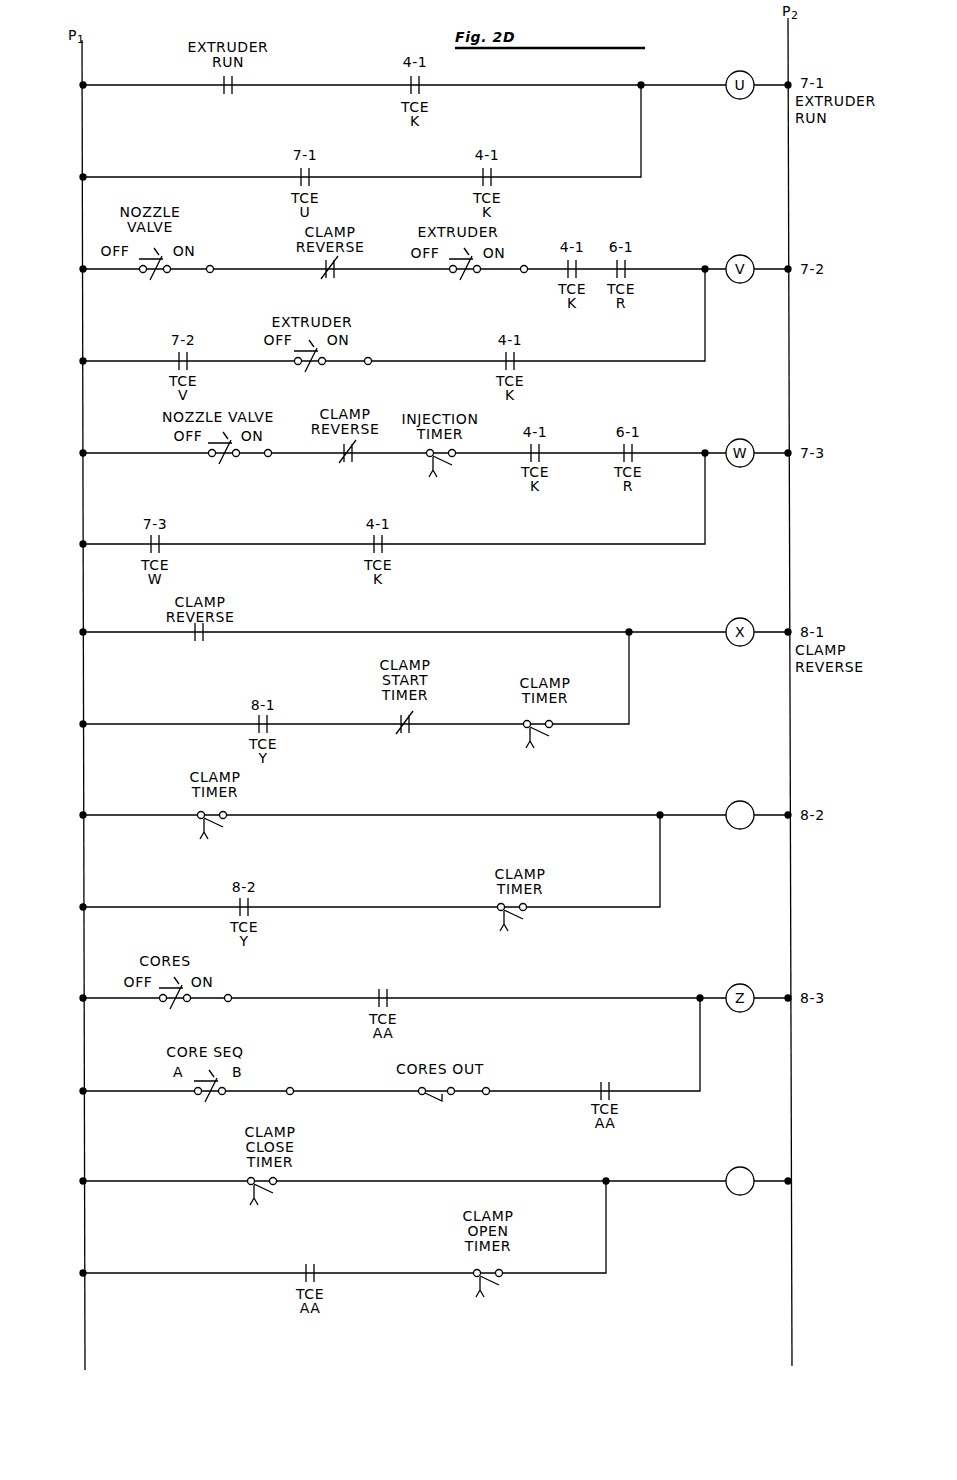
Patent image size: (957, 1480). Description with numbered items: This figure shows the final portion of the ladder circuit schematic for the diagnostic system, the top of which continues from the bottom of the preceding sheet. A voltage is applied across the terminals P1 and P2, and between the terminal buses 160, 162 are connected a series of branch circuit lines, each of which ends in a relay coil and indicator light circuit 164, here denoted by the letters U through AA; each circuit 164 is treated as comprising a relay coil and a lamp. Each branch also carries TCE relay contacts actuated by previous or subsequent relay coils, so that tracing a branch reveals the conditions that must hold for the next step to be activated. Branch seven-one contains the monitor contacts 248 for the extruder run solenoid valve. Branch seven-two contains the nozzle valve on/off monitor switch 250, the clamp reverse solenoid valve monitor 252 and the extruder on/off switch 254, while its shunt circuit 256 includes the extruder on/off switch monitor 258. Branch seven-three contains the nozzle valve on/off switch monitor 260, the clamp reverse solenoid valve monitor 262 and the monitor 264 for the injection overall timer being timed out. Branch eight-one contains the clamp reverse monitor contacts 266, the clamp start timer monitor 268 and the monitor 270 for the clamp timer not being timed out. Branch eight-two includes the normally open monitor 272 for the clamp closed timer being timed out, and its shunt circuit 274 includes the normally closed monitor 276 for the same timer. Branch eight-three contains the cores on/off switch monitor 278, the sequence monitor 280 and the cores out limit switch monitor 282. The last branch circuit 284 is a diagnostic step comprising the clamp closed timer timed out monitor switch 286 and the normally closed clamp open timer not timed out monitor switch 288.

The terminal bus 160 is at (82, 116).
The power rail P2 162 is at (792, 163).
The relay coil and indicator light circuit 164 is at (738, 801).
The monitor contacts 248 is at (223, 88).
The nozzle valve on/off monitor switch 250 is at (151, 279).
The clamp reverse solenoid valve monitor 252 is at (325, 276).
The extruder on/off switch 254 is at (455, 276).
The shunt circuit 256 is at (612, 360).
The extruder on/off switch monitor 258 is at (306, 368).
The nozzle valve on/off switch monitor 260 is at (219, 463).
The clamp reverse solenoid valve monitor 262 is at (343, 461).
The injection overall timer monitor 264 is at (452, 458).
The clamp reverse monitor contacts 266 is at (204, 636).
The clamp start timer monitor 268 is at (400, 736).
The clamp timer monitor 270 is at (548, 730).
The clamp closed timer monitor 272 is at (222, 826).
The shunt circuit 274 is at (662, 908).
The clamp closed timer monitor 276 is at (533, 926).
The cores on/off switch monitor 278 is at (178, 1008).
The sequence monitor 280 is at (197, 1101).
The cores out limit switch monitor 282 is at (454, 1111).
The last branch circuit 284 is at (768, 1178).
The clamp closed timer timed out monitor switch 286 is at (272, 1192).
The clamp open timer monitor switch 288 is at (498, 1284).